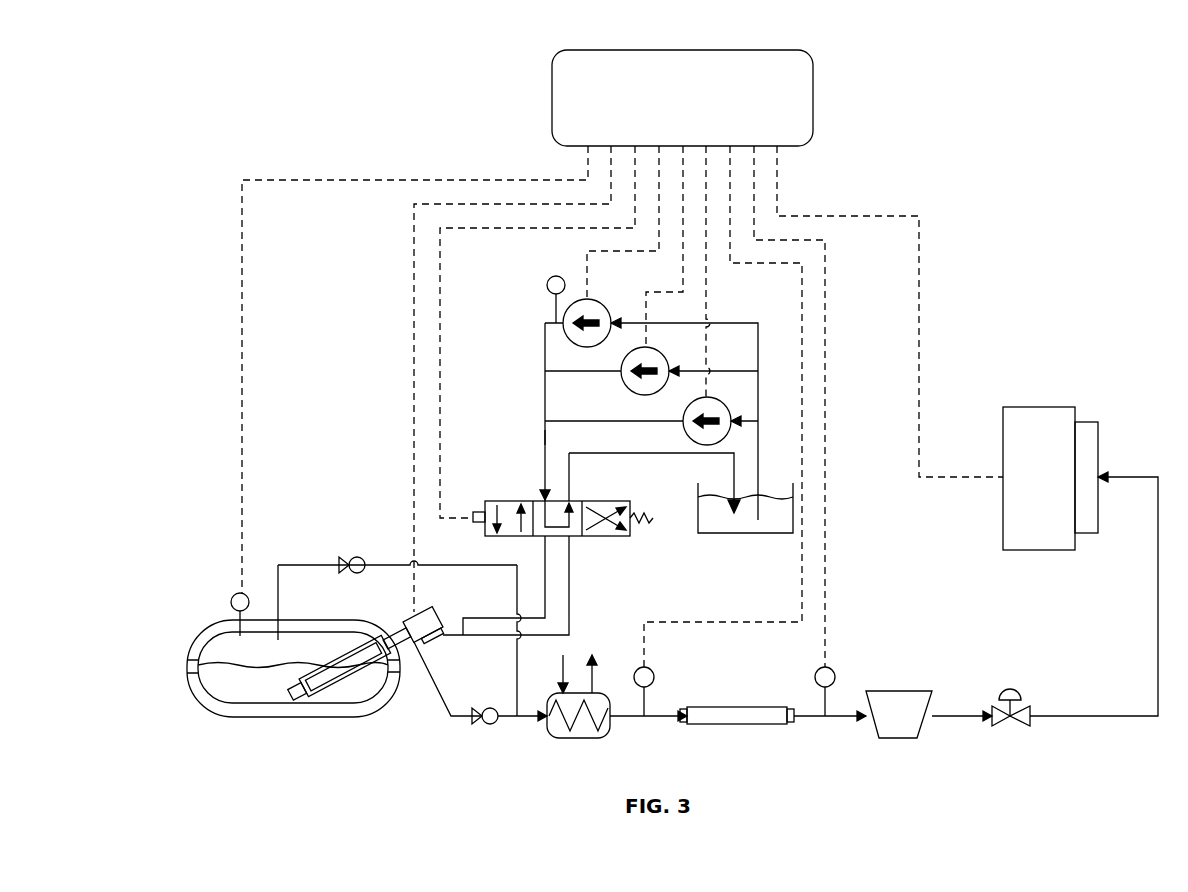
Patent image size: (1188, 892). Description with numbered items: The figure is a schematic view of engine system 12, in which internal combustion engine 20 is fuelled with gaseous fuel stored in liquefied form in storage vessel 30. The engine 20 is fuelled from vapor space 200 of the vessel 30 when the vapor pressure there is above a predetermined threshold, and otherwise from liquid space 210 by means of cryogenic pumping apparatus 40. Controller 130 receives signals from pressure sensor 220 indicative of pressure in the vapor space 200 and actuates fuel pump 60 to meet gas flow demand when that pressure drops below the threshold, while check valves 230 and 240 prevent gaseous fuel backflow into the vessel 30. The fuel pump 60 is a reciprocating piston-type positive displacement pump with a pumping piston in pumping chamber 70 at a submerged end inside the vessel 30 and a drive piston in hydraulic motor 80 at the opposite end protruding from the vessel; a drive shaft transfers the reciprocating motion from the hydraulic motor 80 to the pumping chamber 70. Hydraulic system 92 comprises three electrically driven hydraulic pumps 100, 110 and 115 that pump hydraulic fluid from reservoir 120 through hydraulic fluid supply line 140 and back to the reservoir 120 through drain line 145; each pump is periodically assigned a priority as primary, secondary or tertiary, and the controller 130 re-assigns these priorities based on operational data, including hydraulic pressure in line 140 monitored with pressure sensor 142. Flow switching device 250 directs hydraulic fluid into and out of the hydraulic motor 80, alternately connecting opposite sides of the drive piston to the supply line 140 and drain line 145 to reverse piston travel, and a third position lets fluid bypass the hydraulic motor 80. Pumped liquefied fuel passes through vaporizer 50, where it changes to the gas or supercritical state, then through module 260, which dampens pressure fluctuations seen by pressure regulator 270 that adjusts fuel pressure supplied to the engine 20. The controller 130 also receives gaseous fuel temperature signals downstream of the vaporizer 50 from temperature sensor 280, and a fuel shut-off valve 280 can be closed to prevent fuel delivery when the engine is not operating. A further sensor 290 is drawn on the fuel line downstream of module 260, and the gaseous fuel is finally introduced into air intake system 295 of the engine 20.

The engine system 12 is at (996, 186).
The internal combustion engine 20 is at (1041, 406).
The storage vessel 30 is at (218, 718).
The cryogenic pumping apparatus 40 is at (344, 426).
The vaporizer 50 is at (578, 740).
The fuel pump 60 is at (394, 618).
The pumping chamber 70 is at (318, 699).
The hydraulic motor 80 is at (443, 650).
The hydraulic system 92 is at (504, 374).
The hydraulic pump 100 is at (604, 308).
The hydraulic pump 110 is at (661, 356).
The hydraulic pump 115 is at (720, 406).
The reservoir 120 is at (752, 535).
The controller 130 is at (679, 48).
The hydraulic fluid supply line 140 is at (545, 435).
The pressure sensor 142 is at (551, 278).
The drain line 145 is at (668, 455).
The vapor space 200 is at (249, 650).
The liquid space 210 is at (249, 685).
The pressure sensor 220 is at (228, 604).
The check valve 230 is at (356, 556).
The check valve 240 is at (488, 725).
The flow switching device 250 is at (509, 500).
The module 260 is at (737, 726).
The pressure regulator 270 is at (895, 740).
The temperature sensor / fuel shut-off valve 280 is at (656, 678).
The temperature sensor 290 is at (815, 678).
The air intake system 295 is at (1100, 447).